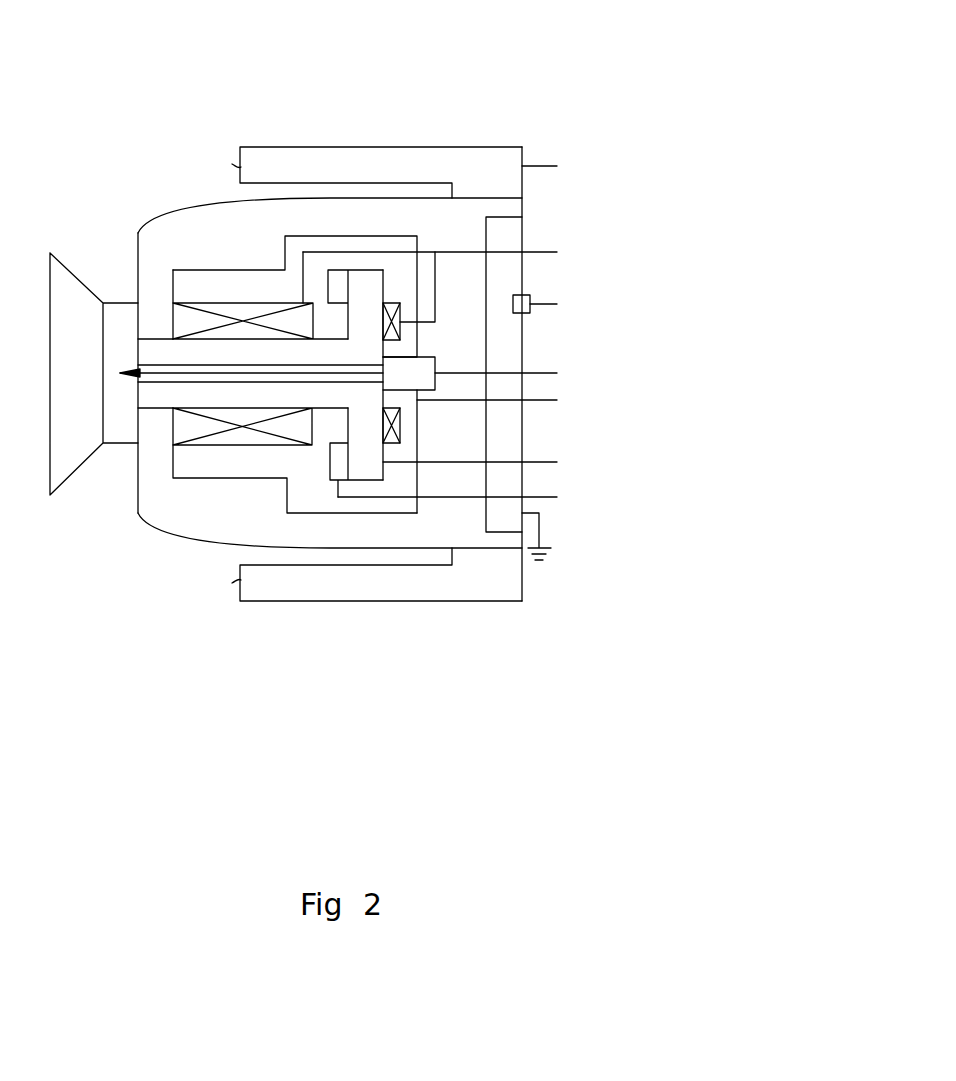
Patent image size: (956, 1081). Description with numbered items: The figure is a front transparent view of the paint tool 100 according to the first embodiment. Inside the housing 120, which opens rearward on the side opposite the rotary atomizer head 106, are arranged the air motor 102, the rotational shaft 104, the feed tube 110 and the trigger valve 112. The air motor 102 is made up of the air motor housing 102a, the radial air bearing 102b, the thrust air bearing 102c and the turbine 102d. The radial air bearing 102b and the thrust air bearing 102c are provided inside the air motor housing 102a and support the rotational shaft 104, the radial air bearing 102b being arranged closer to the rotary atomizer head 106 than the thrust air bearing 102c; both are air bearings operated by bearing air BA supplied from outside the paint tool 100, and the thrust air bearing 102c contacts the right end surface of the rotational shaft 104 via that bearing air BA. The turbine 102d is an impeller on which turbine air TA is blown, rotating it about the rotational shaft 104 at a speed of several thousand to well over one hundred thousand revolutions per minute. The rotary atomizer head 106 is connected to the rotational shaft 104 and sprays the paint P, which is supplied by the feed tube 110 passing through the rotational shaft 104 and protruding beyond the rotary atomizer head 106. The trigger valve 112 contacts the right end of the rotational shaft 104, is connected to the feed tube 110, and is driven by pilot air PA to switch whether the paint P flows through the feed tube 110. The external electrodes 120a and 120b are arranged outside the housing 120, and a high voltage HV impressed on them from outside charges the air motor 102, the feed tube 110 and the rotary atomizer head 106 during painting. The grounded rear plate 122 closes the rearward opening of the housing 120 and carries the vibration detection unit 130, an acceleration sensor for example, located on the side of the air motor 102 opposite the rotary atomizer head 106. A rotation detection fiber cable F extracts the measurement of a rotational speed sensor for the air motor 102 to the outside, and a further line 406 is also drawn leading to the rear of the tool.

The paint tool 100 is at (643, 29).
The housing 120 is at (175, 228).
The external electrode 120a is at (367, 165).
The external electrode 120b is at (370, 601).
The high voltage HV is at (535, 163).
The rear plate 122 is at (512, 349).
The vibration detection unit 130 is at (547, 282).
The bearing air BA is at (536, 249).
The pilot air PA is at (556, 375).
The supply line 406 is at (556, 402).
The rotation detection fiber cable F is at (553, 463).
The turbine air TA is at (554, 499).
The rotary atomizer head 106 is at (83, 465).
The feed tube 110 is at (160, 364).
The paint P is at (370, 364).
The rotational shaft 104 is at (157, 402).
The air motor 102 is at (260, 268).
The air motor housing 102a is at (226, 479).
The radial air bearing 102b is at (222, 308).
The thrust air bearing 102c is at (388, 302).
The turbine 102d is at (330, 466).
The trigger valve 112 is at (422, 356).